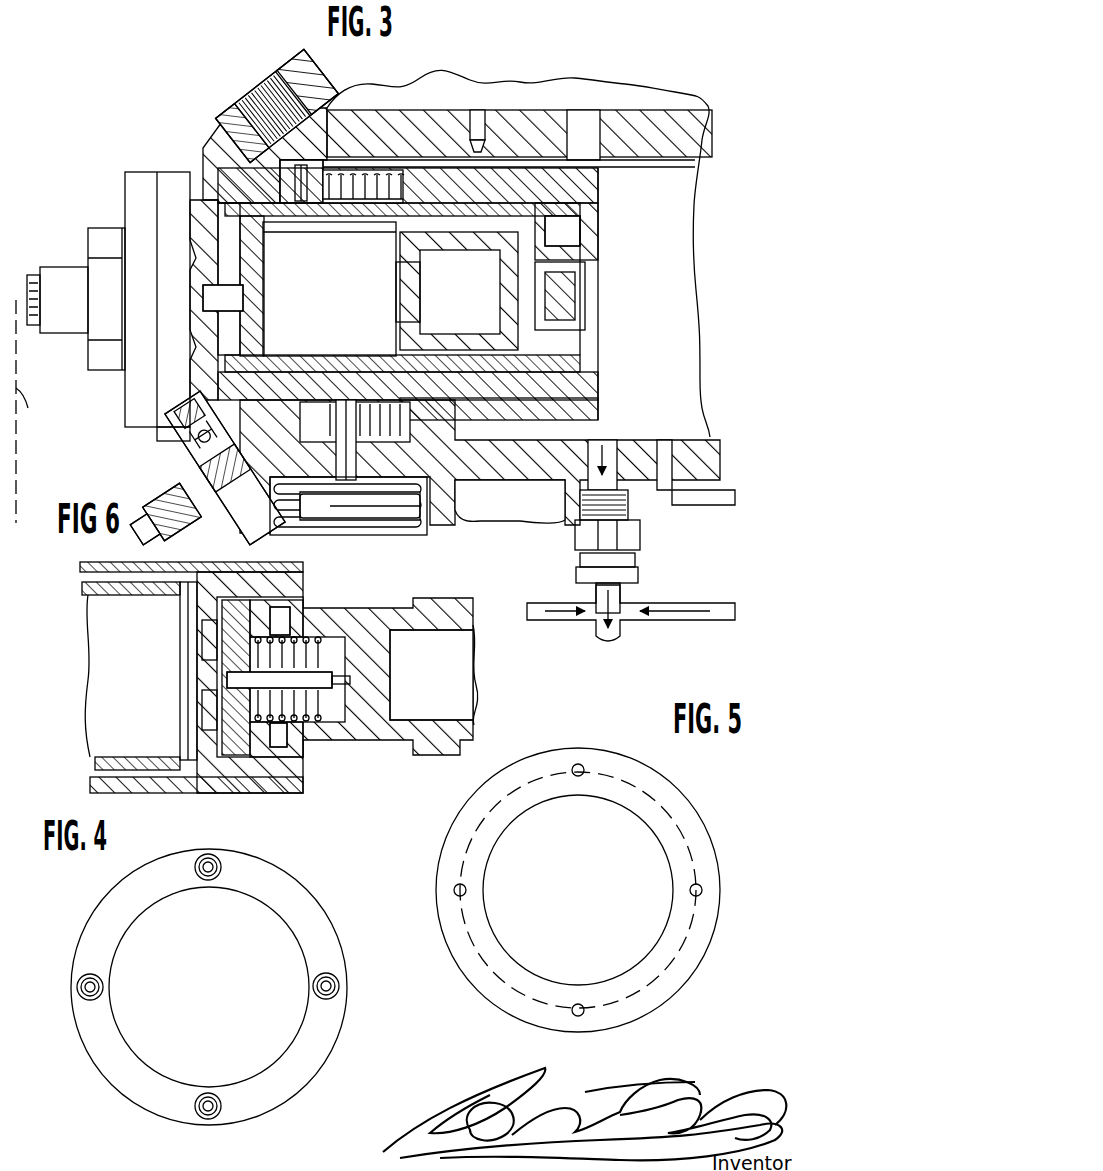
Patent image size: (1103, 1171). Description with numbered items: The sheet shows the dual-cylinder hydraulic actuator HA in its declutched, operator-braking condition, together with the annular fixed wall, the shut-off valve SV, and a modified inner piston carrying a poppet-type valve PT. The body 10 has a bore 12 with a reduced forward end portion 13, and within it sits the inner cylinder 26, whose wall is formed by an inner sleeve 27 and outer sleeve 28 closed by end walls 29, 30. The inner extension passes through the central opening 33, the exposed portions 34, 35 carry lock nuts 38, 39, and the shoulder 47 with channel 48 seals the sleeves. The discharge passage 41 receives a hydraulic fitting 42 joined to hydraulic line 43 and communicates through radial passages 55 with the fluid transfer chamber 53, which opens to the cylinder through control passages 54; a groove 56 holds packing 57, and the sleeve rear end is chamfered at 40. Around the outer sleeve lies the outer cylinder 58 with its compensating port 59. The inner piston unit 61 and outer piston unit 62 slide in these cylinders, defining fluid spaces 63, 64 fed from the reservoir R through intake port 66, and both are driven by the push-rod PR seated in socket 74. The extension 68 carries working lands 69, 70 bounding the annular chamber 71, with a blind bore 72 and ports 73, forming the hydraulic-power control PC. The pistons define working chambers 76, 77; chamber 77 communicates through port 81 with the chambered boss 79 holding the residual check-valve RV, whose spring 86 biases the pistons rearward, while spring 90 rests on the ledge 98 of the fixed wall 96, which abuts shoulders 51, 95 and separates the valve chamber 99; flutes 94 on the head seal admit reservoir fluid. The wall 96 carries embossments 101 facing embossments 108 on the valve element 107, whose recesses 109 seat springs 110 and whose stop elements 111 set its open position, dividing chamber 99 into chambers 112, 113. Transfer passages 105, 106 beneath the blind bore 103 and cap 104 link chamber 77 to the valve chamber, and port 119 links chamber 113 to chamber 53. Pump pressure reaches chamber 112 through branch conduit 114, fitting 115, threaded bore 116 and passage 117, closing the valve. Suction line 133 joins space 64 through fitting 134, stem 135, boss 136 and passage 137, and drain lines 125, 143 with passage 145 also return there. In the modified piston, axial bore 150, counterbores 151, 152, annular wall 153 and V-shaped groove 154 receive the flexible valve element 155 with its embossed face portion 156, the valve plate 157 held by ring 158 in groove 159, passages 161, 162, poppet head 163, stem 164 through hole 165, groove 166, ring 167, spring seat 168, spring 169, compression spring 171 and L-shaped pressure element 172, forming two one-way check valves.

In FIG. 3, the body 10 is at (355, 70).
In FIG. 3, the bore 12 is at (704, 175).
In FIG. 3, the forward end portion 13 is at (192, 230).
In FIG. 3, the inner cylinder 26 is at (495, 470).
In FIG. 6, the inner cylinder 26 is at (80, 700).
In FIG. 3, the inner sleeve 27 is at (586, 366).
In FIG. 6, the inner sleeve 27 is at (92, 618).
In FIG. 3, the outer sleeve 28 is at (584, 212).
In FIG. 6, the outer sleeve 28 is at (82, 590).
In FIG. 3, the end wall 29 is at (195, 388).
In FIG. 3, the end wall 30 is at (158, 388).
In FIG. 3, the central opening 33 is at (190, 270).
In FIG. 3, the exposed portion 34 is at (90, 262).
In FIG. 3, the exposed portion 35 is at (128, 240).
In FIG. 3, the lock nut 38 is at (95, 330).
In FIG. 3, the lock nut 39 is at (125, 365).
In FIG. 3, the chamfered rear end 40 is at (596, 332).
In FIG. 3, the fluid discharge passage 41 is at (200, 320).
In FIG. 3, the hydraulic fitting 42 is at (52, 270).
In FIG. 3, the hydraulic line 43 is at (18, 390).
In FIG. 3, the internal annular shoulder 47 is at (192, 248).
In FIG. 3, the annular channel 48 is at (192, 285).
In FIG. 3, the external annular shoulder 51 is at (340, 440).
In FIG. 3, the fluid transfer chamber 53 is at (395, 262).
In FIG. 6, the fluid transfer chamber 53 is at (100, 770).
In FIG. 3, the control passages 54 is at (500, 422).
In FIG. 6, the control passages 54 is at (180, 742).
In FIG. 3, the radial passages 55 is at (205, 358).
In FIG. 3, the external annular groove 56 is at (598, 240).
In FIG. 3, the packing 57 is at (590, 226).
In FIG. 6, the packing 57 is at (282, 792).
In FIG. 3, the outer annular cylinder 58 is at (545, 478).
In FIG. 3, the compensating port 59 is at (490, 108).
In FIG. 3, the inner piston unit 61 is at (600, 262).
In FIG. 6, the inner piston unit 61 is at (367, 715).
In FIG. 3, the outer piston unit 62 is at (600, 186).
In FIG. 3, the inner annular fluid space 63 is at (598, 395).
In FIG. 3, the outer annular fluid space 64 is at (528, 150).
In FIG. 3, the intake port 66 is at (592, 112).
In FIG. 3, the cylindrical extension 68 is at (596, 345).
In FIG. 6, the cylindrical extension 68 is at (475, 726).
In FIG. 3, the forward valve working land 69 is at (400, 280).
In FIG. 6, the forward valve working land 69 is at (215, 745).
In FIG. 3, the rear valve working land 70 is at (580, 300).
In FIG. 6, the rear valve working land 70 is at (473, 620).
In FIG. 3, the annular fluid chamber 71 is at (596, 385).
In FIG. 6, the annular fluid chamber 71 is at (428, 720).
In FIG. 3, the blind axial bore 72 is at (398, 300).
In FIG. 3, the control ports 73 is at (432, 330).
In FIG. 6, the control ports 73 is at (310, 578).
In FIG. 3, the axial socket 74 is at (596, 288).
In FIG. 6, the axial socket 74 is at (458, 728).
In FIG. 3, the inner working chamber 76 is at (262, 297).
In FIG. 6, the inner working chamber 76 is at (90, 632).
In FIG. 3, the outer working chamber 77 is at (400, 150).
In FIG. 3, the chambered boss 79 is at (462, 520).
In FIG. 3, the port 81 is at (400, 537).
In FIG. 3, the spring 86 is at (437, 527).
In FIG. 3, the spring 90 is at (410, 465).
In FIG. 3, the flutes 94 is at (276, 98).
In FIG. 3, the internal annular shoulder 95 is at (388, 160).
In FIG. 5, the annular fixed wall 96 is at (708, 958).
In FIG. 5, the forward offset 98 is at (690, 848).
In FIG. 3, the annular valve chamber 99 is at (203, 125).
In FIG. 3, the circular embossments 101 is at (350, 378).
In FIG. 5, the circular embossments 101 is at (582, 778).
In FIG. 3, the threaded blind axial bore 103 is at (312, 112).
In FIG. 3, the threaded closure cap 104 is at (242, 75).
In FIG. 3, the fluid transfer passage 105 is at (232, 112).
In FIG. 3, the fluid transfer passage 106 is at (360, 130).
In FIG. 3, the valve-forming element 107 is at (265, 222).
In FIG. 4, the valve-forming element 107 is at (346, 1022).
In FIG. 3, the circular embossments 108 is at (250, 455).
In FIG. 4, the circular embossments 108 is at (208, 880).
In FIG. 3, the circular recess 109 is at (290, 440).
In FIG. 4, the circular recess 109 is at (222, 870).
In FIG. 3, the springs 110 is at (330, 375).
In FIG. 4, the springs 110 is at (221, 860).
In FIG. 3, the circular stop elements 111 is at (190, 432).
In FIG. 3, the fluid pressure valve chamber 112 is at (195, 170).
In FIG. 3, the fluid pressure valve chamber 113 is at (305, 372).
In FIG. 3, the branch conduit 114 is at (165, 535).
In FIG. 3, the hydraulic fitting 115 is at (198, 505).
In FIG. 3, the threaded bore 116 is at (188, 482).
In FIG. 3, the fluid passage 117 is at (200, 448).
In FIG. 3, the port 119 is at (275, 222).
In FIG. 3, the drain line 125 is at (560, 622).
In FIG. 3, the suction line 133 is at (604, 640).
In FIG. 3, the hydraulic fitting 134 is at (640, 575).
In FIG. 3, the threaded stem 135 is at (630, 500).
In FIG. 3, the depending boss 136 is at (577, 525).
In FIG. 3, the passage 137 is at (615, 445).
In FIG. 3, the drain line 143 is at (735, 498).
In FIG. 3, the passage 145 is at (662, 462).
In FIG. 6, the axial bore 150 is at (340, 668).
In FIG. 6, the elongated counterbore 151 is at (340, 740).
In FIG. 6, the terminating counterbore 152 is at (215, 648).
In FIG. 6, the annular wall 153 is at (350, 678).
In FIG. 6, the V-shaped groove 154 is at (272, 740).
In FIG. 6, the flexible valve element 155 is at (225, 640).
In FIG. 6, the peripheral face portion 156 is at (245, 740).
In FIG. 6, the valve plate 157 is at (222, 652).
In FIG. 6, the split retaining ring 158 is at (183, 564).
In FIG. 6, the internal annular groove 159 is at (225, 572).
In FIG. 6, the passages 161 is at (215, 668).
In FIG. 6, the passages 162 is at (212, 676).
In FIG. 6, the valve head 163 is at (200, 690).
In FIG. 6, the valve stem 164 is at (295, 732).
In FIG. 6, the central hole 165 is at (230, 686).
In FIG. 6, the annular external groove 166 is at (345, 650).
In FIG. 6, the split retaining ring 167 is at (300, 660).
In FIG. 6, the spring seat 168 is at (290, 635).
In FIG. 6, the spring 169 is at (290, 740).
In FIG. 6, the compression spring 171 is at (300, 790).
In FIG. 6, the pressure-applying element 172 is at (215, 790).
In FIG. 3, the hydraulic actuator HA is at (696, 90).
In FIG. 3, the reservoir R is at (660, 100).
In FIG. 3, the shut-off valve SV is at (190, 150).
In FIG. 3, the push-rod PR is at (590, 302).
In FIG. 3, the hydraulic-power control PC is at (500, 350).
In FIG. 3, the residual pressure check-valve RV is at (355, 537).
In FIG. 6, the poppet-type valve PT is at (249, 678).